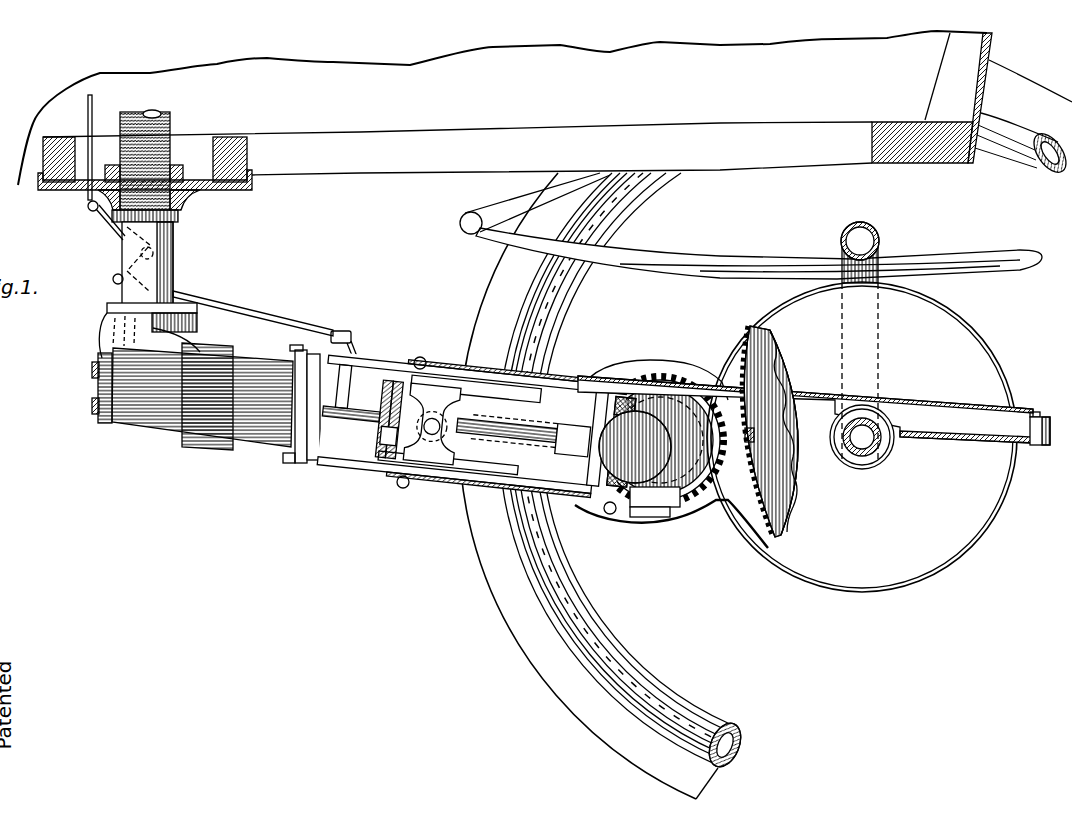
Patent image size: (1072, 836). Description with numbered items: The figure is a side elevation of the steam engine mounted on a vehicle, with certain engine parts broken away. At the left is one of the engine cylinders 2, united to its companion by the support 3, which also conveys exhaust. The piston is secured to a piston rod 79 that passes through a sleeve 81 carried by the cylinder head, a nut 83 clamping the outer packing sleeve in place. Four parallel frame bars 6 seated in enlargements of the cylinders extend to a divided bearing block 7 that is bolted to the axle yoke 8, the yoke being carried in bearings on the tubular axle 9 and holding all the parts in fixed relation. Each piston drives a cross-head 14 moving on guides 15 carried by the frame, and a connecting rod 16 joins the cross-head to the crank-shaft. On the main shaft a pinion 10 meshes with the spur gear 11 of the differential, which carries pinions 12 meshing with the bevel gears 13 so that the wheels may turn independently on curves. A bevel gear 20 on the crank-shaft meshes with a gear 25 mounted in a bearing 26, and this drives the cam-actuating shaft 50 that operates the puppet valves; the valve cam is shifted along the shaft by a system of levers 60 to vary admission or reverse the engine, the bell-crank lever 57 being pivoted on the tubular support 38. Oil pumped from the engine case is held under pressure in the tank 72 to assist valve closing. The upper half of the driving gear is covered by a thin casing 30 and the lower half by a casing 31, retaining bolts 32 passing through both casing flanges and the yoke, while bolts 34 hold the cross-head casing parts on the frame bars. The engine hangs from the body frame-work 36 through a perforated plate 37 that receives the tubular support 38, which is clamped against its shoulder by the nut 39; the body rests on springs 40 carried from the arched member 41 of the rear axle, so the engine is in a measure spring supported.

The cylinder 2 is at (248, 443).
The support 3 is at (155, 328).
The frame bars 6 is at (360, 368).
The divided bearing block 7 is at (642, 517).
The axle yoke 8 is at (708, 390).
The tubular axle 9 is at (879, 450).
The pinion 10 is at (700, 483).
The spur gear 11 is at (757, 340).
The pinions 12 is at (754, 435).
The bevel gears 13 is at (789, 358).
The cross-head 14 is at (432, 452).
The guides 15 is at (492, 482).
The connecting rod 16 is at (613, 427).
The bevel gear 20 is at (676, 508).
The gear 25 is at (600, 497).
The bearing 26 is at (577, 448).
The casing 30 is at (962, 333).
The casing 31 is at (960, 528).
The retaining bolts 32 is at (1040, 410).
The bolts 34 is at (421, 361).
The frame-work 36 is at (236, 134).
The perforated plate 37 is at (205, 182).
The tubular support 38 is at (160, 272).
The nut 39 is at (181, 160).
The springs 40 is at (693, 266).
The arched member 41 is at (867, 228).
The cam-actuating shaft 50 is at (527, 433).
The bell-crank lever 57 is at (110, 222).
The system of levers 60 is at (282, 320).
The tank 72 is at (397, 390).
The piston rod 79 is at (397, 440).
The sleeve 81 is at (342, 417).
The nut 83 is at (383, 433).